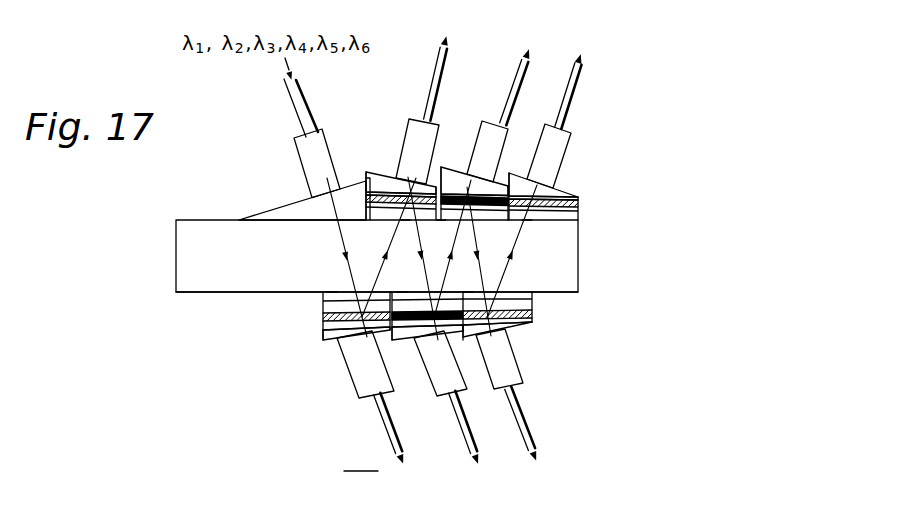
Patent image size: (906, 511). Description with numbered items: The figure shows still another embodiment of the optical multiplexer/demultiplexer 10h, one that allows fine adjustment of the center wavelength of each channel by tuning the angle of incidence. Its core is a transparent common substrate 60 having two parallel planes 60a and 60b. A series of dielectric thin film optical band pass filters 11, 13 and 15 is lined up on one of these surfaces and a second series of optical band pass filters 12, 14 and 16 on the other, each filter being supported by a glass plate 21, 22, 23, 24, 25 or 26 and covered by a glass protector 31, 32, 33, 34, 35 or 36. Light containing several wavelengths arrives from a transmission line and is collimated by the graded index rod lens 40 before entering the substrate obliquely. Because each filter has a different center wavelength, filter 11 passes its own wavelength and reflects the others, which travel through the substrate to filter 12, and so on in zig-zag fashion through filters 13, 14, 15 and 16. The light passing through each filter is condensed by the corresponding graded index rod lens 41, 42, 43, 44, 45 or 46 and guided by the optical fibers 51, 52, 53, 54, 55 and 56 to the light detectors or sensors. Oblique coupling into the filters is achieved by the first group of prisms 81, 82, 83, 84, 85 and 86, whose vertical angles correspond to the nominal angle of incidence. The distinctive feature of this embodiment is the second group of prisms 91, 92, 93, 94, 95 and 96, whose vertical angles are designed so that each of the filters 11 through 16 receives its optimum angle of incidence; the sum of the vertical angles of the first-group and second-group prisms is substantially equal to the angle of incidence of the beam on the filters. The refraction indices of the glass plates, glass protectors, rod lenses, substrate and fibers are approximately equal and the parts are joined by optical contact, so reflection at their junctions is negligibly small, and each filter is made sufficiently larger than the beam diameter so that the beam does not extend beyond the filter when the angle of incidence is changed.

The optical multiplexer/demultiplexer device 10h is at (375, 250).
The transparent common substrate 60 is at (176, 240).
The parallel plane of common substrate 60a is at (207, 219).
The parallel plane of common substrate 60b is at (197, 293).
The graded index rod lens 40 is at (298, 152).
The graded index rod lens 41 is at (359, 398).
The graded index rod lens 42 is at (409, 120).
The graded index rod lens 43 is at (437, 397).
The graded index rod lens 44 is at (483, 122).
The graded index rod lens 45 is at (495, 390).
The graded index rod lens 46 is at (546, 125).
The optical fiber 51 is at (381, 418).
The optical fiber 52 is at (433, 72).
The optical fiber 53 is at (460, 424).
The optical fiber 54 is at (515, 76).
The optical fiber 55 is at (517, 424).
The optical fiber 56 is at (568, 84).
The dielectric thin film optical band pass filter 11 is at (323, 321).
The dielectric thin film optical band pass filter 12 is at (366, 203).
The dielectric thin film optical band pass filter 13 is at (438, 322).
The dielectric thin film optical band pass filter 14 is at (497, 210).
The dielectric thin film optical band pass filter 15 is at (532, 313).
The dielectric thin film optical band pass filter 16 is at (580, 204).
The glass plate 21 is at (323, 307).
The glass plate 22 is at (378, 221).
The glass plate 23 is at (435, 297).
The glass plate 24 is at (452, 226).
The glass plate 25 is at (532, 301).
The glass plate 26 is at (578, 219).
The glass protector 31 is at (323, 331).
The glass protector 32 is at (366, 178).
The glass protector 33 is at (455, 330).
The glass protector 34 is at (500, 222).
The glass protector 35 is at (532, 322).
The glass protector 36 is at (580, 194).
The prism 81 is at (323, 337).
The prism 82 is at (377, 174).
The prism 83 is at (400, 336).
The prism 84 is at (455, 170).
The prism 85 is at (525, 330).
The prism 86 is at (565, 185).
The second group prism 91 is at (332, 292).
The second group prism 92 is at (405, 221).
The second group prism 93 is at (402, 297).
The second group prism 94 is at (441, 221).
The second group prism 95 is at (468, 297).
The second group prism 96 is at (527, 216).